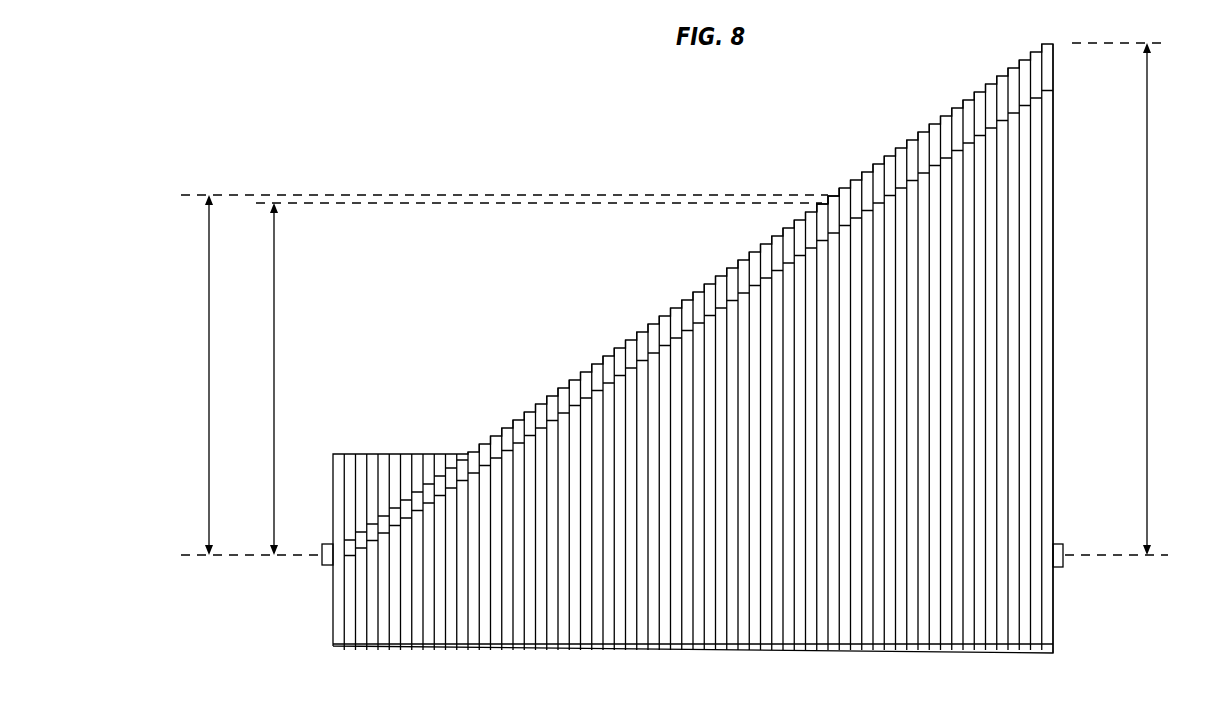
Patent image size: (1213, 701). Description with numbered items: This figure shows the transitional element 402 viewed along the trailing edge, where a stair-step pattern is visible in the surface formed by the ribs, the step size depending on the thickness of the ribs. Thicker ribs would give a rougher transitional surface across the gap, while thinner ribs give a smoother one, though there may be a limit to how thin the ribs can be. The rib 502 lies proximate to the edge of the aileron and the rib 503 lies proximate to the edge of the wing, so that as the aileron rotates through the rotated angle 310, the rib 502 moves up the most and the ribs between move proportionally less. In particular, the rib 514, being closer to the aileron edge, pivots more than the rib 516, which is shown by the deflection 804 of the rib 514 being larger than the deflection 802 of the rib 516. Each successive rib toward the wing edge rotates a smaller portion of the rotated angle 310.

The rotated angle 310 is at (1148, 224).
The transitional element 402 is at (530, 271).
The rib 502 is at (1048, 154).
The rib 503 is at (338, 512).
The rib 514 is at (833, 196).
The rib 516 is at (822, 206).
The deflection 802 is at (274, 316).
The deflection 804 is at (209, 317).